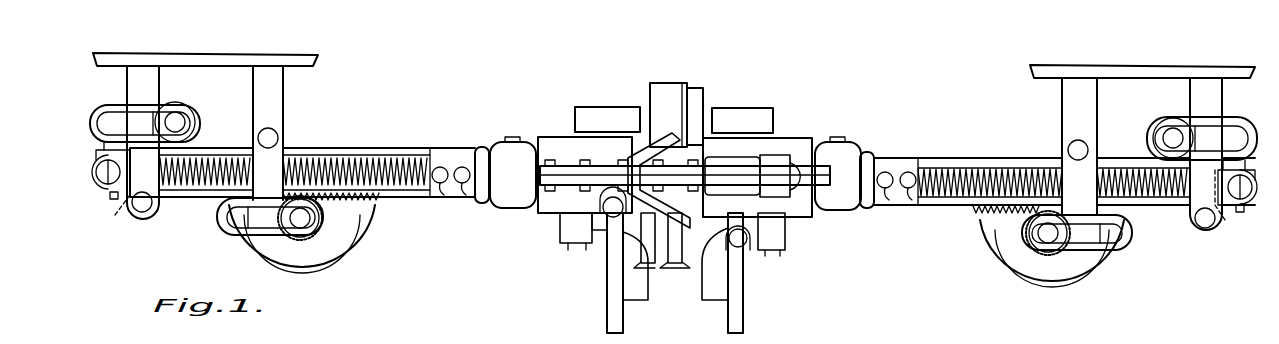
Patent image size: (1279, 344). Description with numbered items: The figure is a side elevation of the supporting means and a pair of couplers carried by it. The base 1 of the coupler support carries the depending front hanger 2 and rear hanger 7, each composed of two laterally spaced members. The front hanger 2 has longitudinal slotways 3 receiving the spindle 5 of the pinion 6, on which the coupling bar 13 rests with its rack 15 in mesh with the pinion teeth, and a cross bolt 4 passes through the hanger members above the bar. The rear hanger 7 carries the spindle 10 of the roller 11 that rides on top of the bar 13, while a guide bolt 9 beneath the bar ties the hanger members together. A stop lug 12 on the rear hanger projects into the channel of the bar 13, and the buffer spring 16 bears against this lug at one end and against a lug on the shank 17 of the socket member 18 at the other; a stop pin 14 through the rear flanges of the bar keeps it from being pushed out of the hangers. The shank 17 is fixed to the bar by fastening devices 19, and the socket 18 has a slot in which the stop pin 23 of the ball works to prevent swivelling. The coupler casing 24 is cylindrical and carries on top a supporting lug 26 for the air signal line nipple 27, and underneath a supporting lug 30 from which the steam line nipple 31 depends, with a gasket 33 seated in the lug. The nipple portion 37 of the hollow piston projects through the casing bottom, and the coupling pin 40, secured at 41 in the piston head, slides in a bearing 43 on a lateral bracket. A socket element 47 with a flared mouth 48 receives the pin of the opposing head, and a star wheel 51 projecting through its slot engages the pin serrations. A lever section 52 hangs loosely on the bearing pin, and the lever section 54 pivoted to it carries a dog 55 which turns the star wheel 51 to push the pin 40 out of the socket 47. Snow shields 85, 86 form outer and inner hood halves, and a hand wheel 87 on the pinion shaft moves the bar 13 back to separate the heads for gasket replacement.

The base of the coupler support 1 is at (318, 60).
The front hanger 2 is at (283, 97).
The longitudinal slotways 3 is at (228, 232).
The cross bolt 4 is at (276, 137).
The spindle 5 is at (302, 228).
The pinion 6 is at (320, 228).
The rear hanger 7 is at (140, 84).
The guide bolt 9 is at (143, 210).
The spindle 10 is at (183, 118).
The roller 11 is at (197, 122).
The stop lug 12 is at (122, 215).
The coupling bar 13 is at (408, 152).
The stop pin 14 is at (110, 190).
The rack 15 is at (368, 198).
The buffer spring 16 is at (378, 152).
The shank 17 is at (445, 165).
The socket member 18 is at (516, 200).
The fastening devices 19 is at (464, 190).
The stop pin 23 is at (517, 132).
The coupler casing 24 is at (550, 137).
The supporting lug 26 is at (640, 110).
The air signal line nipple 27 is at (590, 108).
The supporting lug 30 is at (672, 270).
The steam line nipple 31 is at (630, 282).
The gasket 33 is at (668, 248).
The nipple portion 37 is at (565, 248).
The coupling pin 40 is at (730, 172).
The securing point 41 is at (770, 170).
The bearing 43 is at (708, 197).
The socket element 47 is at (685, 180).
The flared mouth 48 is at (632, 166).
The star wheel 51 is at (600, 207).
The lever section 52 is at (565, 231).
The lever section 54 is at (607, 315).
The dog 55 is at (598, 245).
The snow shield 85 is at (673, 82).
The snow shield 86 is at (703, 96).
The hand wheel 87 is at (360, 258).